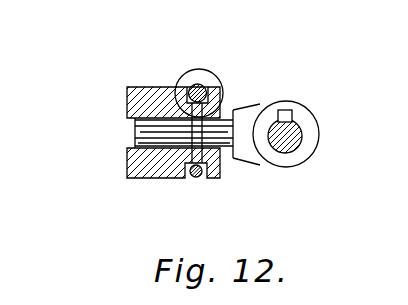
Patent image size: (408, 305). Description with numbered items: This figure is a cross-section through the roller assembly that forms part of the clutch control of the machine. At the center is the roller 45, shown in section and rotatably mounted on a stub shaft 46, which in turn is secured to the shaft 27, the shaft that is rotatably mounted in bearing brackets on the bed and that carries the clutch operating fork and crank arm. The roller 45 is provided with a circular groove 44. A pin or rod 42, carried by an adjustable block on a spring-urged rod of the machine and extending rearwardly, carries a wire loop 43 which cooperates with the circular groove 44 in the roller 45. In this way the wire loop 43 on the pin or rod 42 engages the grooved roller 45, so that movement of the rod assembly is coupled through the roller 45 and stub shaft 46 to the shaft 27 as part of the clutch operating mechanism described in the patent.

The shaft 27 is at (302, 142).
The pin or rod 42 is at (197, 88).
The wire loop 43 is at (203, 73).
The circular groove 44 is at (196, 179).
The roller 45 is at (152, 177).
The stub shaft 46 is at (145, 134).